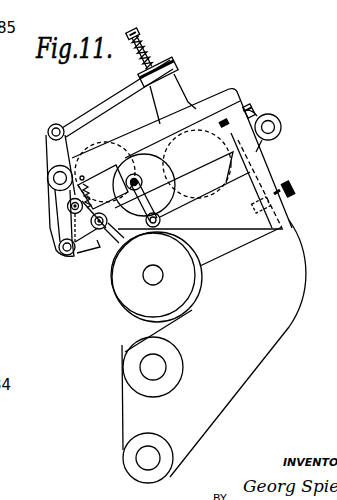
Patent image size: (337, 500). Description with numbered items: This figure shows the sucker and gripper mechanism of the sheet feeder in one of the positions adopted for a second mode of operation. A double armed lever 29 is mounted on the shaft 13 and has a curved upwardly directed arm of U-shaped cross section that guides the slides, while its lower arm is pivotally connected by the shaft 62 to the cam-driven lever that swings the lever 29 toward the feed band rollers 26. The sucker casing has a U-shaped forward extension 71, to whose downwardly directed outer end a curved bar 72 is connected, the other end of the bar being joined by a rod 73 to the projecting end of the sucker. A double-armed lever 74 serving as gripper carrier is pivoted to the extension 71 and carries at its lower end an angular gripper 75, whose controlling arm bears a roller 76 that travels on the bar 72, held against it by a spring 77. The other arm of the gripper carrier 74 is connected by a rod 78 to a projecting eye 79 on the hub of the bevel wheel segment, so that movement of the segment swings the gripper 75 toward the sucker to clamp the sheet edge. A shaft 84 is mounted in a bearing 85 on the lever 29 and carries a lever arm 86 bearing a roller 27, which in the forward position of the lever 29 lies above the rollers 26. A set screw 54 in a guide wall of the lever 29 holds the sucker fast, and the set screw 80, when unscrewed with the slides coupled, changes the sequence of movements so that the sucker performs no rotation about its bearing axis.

The projecting eye 79 is at (164, 60).
The rod 78 is at (97, 111).
The double-armed lever 74 is at (50, 156).
The spring 77 is at (82, 178).
The U-shaped forward extension 71 is at (104, 156).
The rod 73 is at (118, 172).
The set screw 54 is at (243, 106).
The shaft 84 is at (274, 120).
The bearing boss 85 is at (282, 133).
The lever arm 86 is at (262, 156).
The set screw 80 is at (296, 195).
The double armed lever 29 is at (287, 279).
The roller 27 is at (131, 233).
The feed band rollers 26 is at (133, 305).
The curved bar 72 is at (112, 226).
The roller 76 is at (102, 231).
The angular gripper 75 is at (82, 256).
The shaft 13 is at (142, 368).
The shaft 62 is at (148, 459).